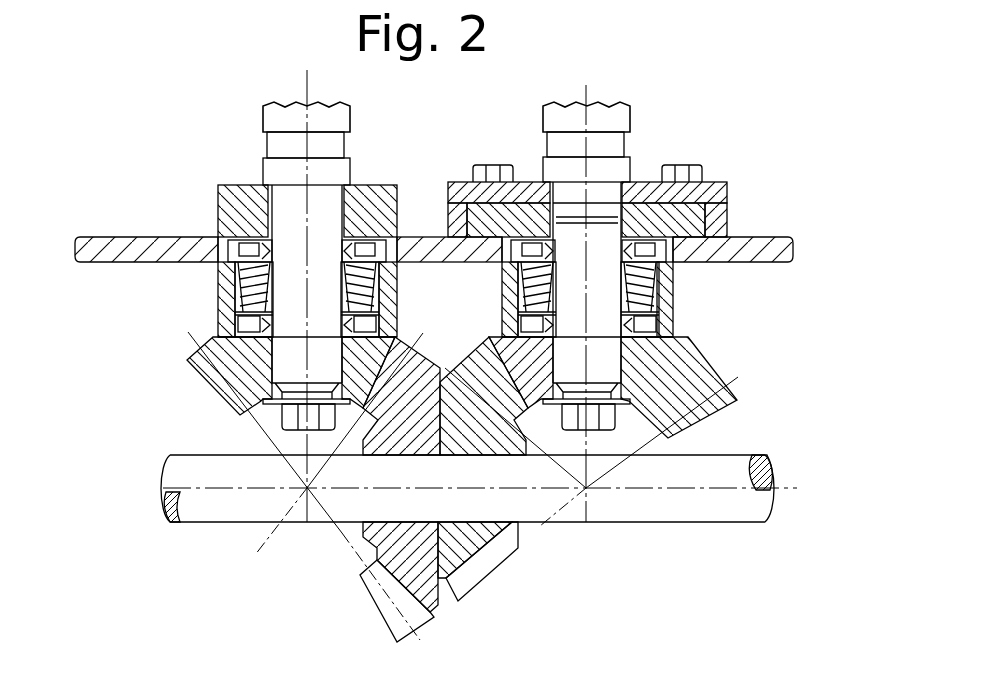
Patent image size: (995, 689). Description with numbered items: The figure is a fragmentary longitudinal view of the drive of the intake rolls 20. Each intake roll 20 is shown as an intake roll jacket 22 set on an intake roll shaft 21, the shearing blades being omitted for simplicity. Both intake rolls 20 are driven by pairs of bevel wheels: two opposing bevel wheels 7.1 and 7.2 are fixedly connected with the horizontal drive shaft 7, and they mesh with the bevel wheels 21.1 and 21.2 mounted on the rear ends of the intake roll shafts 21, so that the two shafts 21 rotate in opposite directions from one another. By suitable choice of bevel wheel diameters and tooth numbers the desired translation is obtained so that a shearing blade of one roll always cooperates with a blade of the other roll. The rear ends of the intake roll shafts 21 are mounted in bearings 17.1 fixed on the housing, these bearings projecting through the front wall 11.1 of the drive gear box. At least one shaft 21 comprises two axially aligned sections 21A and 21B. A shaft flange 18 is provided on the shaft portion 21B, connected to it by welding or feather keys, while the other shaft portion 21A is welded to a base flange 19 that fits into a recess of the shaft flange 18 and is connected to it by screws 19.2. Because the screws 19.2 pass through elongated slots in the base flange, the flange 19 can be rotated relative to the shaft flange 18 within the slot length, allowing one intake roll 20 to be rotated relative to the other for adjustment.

The drive shaft 7 is at (757, 512).
The bevel wheel 7.1 is at (482, 577).
The bevel wheel 7.2 is at (383, 600).
The front wall 11.1 is at (100, 238).
The bearing 17.1 is at (220, 297).
The shaft flange 18 is at (218, 207).
The base flange 19 is at (708, 182).
The screw 19.2 is at (703, 177).
The intake roll 20 is at (553, 112).
The intake roll shaft 21 is at (270, 146).
The shaft section 21A is at (555, 143).
The shaft section 21B is at (603, 358).
The bevel wheel 21.1 is at (748, 398).
The bevel wheel 21.2 is at (187, 360).
The intake roll jacket 22 is at (268, 114).